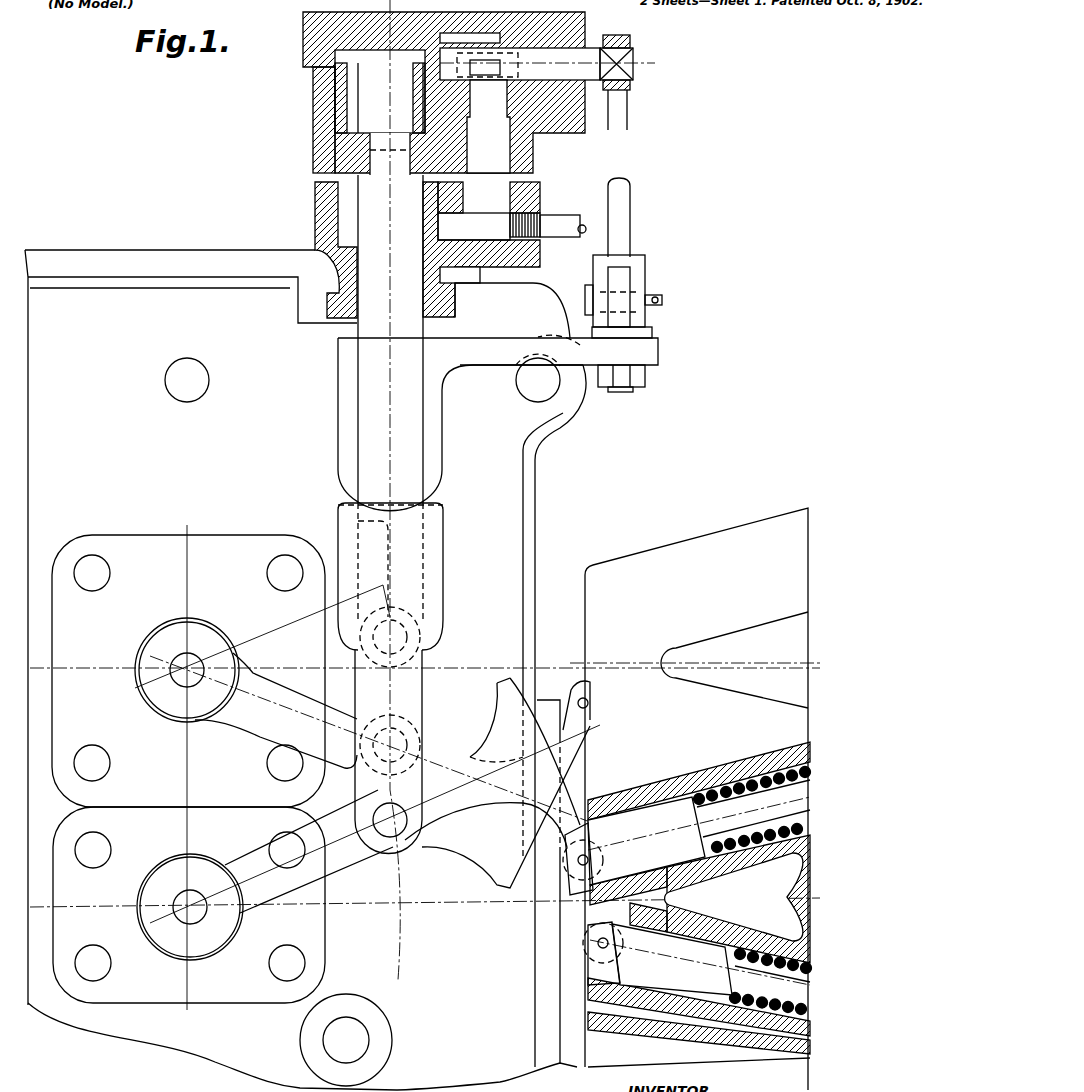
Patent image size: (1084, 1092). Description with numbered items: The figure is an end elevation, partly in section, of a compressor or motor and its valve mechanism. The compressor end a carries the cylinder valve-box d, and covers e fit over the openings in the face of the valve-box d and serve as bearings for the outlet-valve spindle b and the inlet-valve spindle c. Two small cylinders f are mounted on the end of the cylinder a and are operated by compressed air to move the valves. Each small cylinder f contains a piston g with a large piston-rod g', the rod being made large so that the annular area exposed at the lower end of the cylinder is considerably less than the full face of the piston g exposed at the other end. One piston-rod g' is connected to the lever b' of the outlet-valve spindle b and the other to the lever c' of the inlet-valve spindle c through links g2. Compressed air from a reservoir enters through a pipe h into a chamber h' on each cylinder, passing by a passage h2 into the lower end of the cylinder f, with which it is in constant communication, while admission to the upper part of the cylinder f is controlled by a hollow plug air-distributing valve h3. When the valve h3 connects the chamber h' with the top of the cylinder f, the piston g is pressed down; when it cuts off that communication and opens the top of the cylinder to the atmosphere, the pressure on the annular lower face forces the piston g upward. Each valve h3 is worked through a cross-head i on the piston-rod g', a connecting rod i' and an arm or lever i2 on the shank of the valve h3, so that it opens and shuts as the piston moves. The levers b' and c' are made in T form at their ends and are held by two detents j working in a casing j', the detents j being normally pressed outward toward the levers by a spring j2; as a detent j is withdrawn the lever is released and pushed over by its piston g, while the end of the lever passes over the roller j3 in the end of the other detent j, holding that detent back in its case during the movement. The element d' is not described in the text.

The compressor end a is at (548, 466).
The outlet-valve spindle b is at (425, 657).
The outlet-valve lever b' is at (362, 703).
The inlet-valve spindle c is at (425, 891).
The inlet-valve lever c' is at (375, 803).
The cylinder valve-box d is at (370, 567).
The bearing d' is at (237, 1040).
The covers e is at (137, 542).
The small cylinders f is at (318, 143).
The pistons g is at (423, 167).
The piston-rods g' is at (354, 490).
The links g2 is at (447, 580).
The pipe h is at (548, 209).
The chamber h' is at (517, 126).
The passage h2 is at (455, 231).
The hollow plug air-distributing valve h3 is at (582, 30).
The cross-head i is at (513, 365).
The connecting rod i' is at (623, 258).
The arm or lever i2 is at (620, 113).
The detents j is at (699, 896).
The casing j' is at (695, 799).
The spring j2 is at (750, 763).
The roller j3 is at (571, 694).